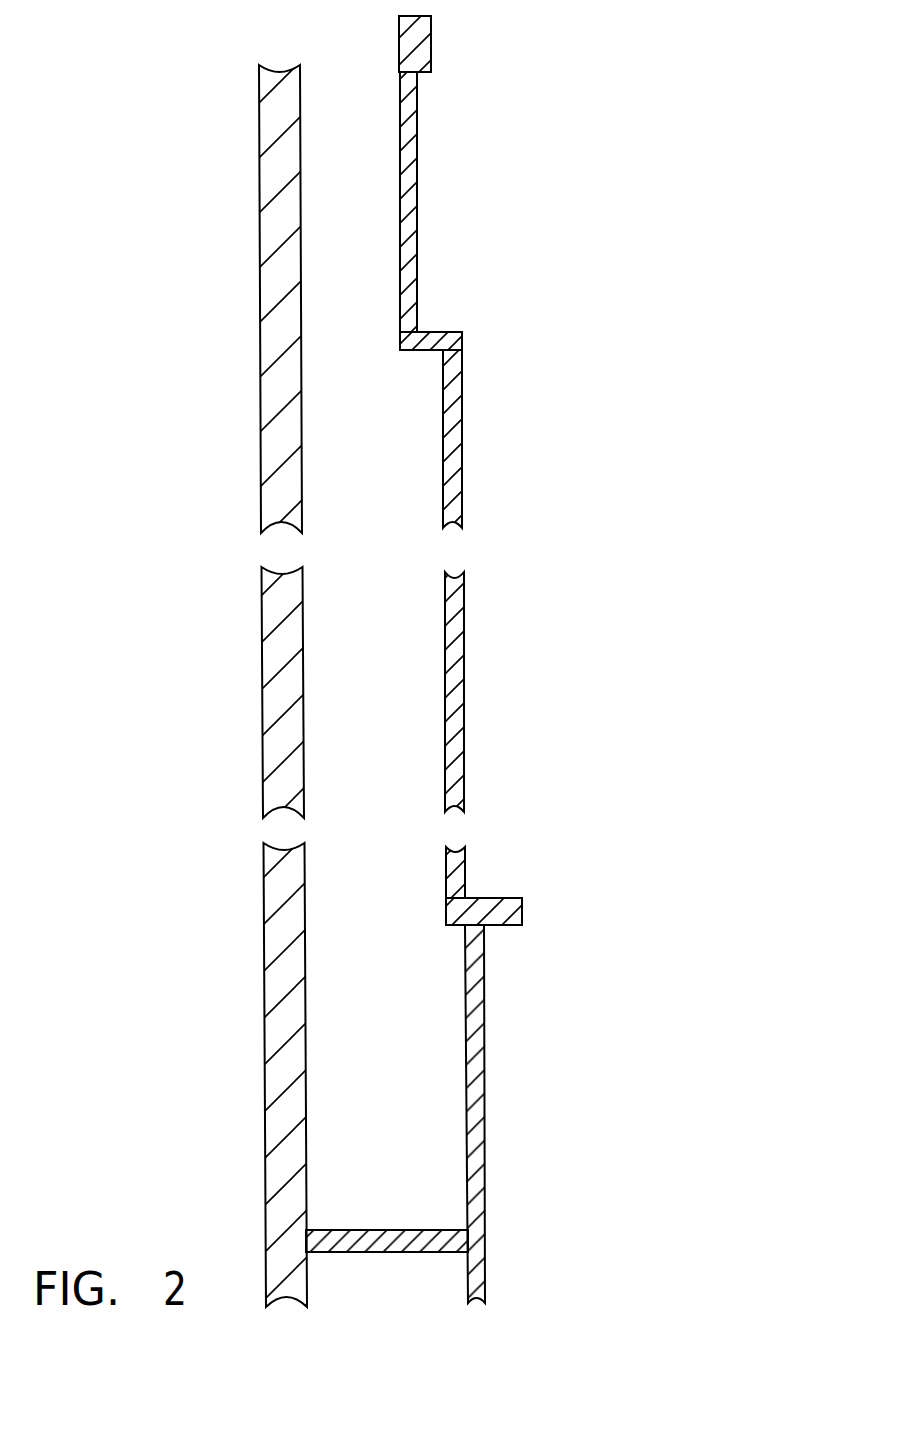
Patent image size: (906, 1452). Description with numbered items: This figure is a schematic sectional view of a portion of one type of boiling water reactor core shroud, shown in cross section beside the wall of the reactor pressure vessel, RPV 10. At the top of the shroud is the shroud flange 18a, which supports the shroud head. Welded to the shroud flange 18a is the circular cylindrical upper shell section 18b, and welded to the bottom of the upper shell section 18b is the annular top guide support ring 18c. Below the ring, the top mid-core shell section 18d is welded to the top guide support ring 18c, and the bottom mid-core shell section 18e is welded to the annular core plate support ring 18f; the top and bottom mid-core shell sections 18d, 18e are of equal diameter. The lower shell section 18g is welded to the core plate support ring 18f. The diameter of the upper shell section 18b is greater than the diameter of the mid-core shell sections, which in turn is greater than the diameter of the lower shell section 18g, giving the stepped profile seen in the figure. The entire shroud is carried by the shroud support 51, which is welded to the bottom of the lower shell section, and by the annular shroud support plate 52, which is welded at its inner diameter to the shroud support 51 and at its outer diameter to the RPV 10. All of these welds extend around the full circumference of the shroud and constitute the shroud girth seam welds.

The RPV 10 is at (273, 975).
The shroud flange 18a is at (428, 42).
The upper shell section 18b is at (412, 183).
The top guide support ring 18c is at (442, 340).
The top mid-core shell section 18d is at (455, 412).
The bottom mid-core shell section 18e is at (458, 768).
The core plate support ring 18f is at (497, 902).
The lower shell section 18g is at (478, 985).
The shroud support 51 is at (478, 1190).
The shroud support plate 52 is at (415, 1237).